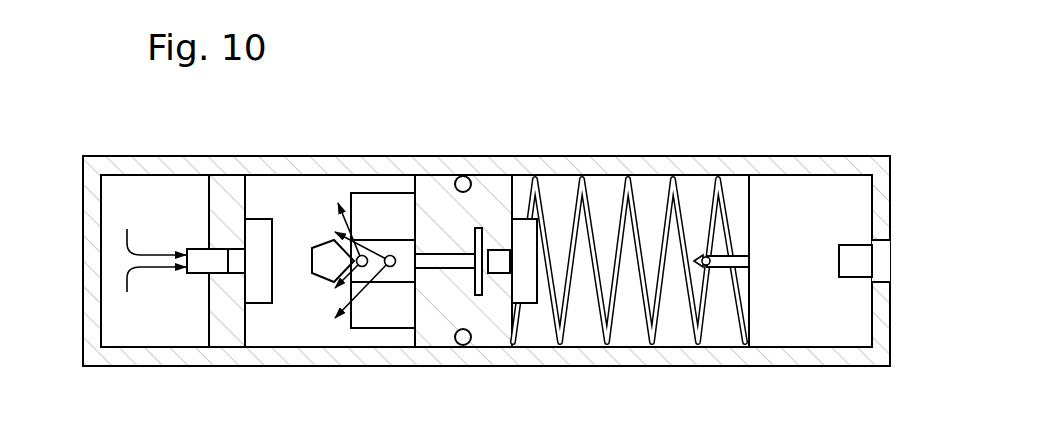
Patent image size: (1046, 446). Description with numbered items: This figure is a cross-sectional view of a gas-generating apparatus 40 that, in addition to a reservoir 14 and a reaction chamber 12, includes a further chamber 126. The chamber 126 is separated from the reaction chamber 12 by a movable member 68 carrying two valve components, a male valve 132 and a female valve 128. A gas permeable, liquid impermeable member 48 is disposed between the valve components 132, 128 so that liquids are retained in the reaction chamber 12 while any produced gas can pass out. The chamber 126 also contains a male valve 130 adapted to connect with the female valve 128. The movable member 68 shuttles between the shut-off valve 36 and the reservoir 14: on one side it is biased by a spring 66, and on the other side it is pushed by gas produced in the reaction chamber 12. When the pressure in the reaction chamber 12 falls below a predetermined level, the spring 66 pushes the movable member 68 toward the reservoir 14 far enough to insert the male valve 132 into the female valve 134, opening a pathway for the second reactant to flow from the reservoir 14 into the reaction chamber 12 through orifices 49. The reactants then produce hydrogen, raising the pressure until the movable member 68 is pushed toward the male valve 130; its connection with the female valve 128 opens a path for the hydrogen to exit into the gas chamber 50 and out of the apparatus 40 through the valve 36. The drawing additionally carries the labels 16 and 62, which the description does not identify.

The gas-generating apparatus 40 is at (130, 120).
The reaction chamber 12 is at (310, 188).
The reservoir 14 is at (180, 193).
The female valve 134 is at (257, 292).
The male valve 132 is at (330, 270).
The orifices 49 is at (392, 256).
The valve body 16 is at (404, 334).
The movable member 68 is at (492, 335).
The bypass bore 62 is at (462, 177).
The gas permeable/liquid impermeable member 48 is at (480, 228).
The female valve 128 is at (527, 288).
The chamber 126 is at (627, 322).
The spring 66 is at (675, 202).
The male valve 130 is at (743, 263).
The gas chamber 50 is at (813, 253).
The shut-off valve 36 is at (880, 250).